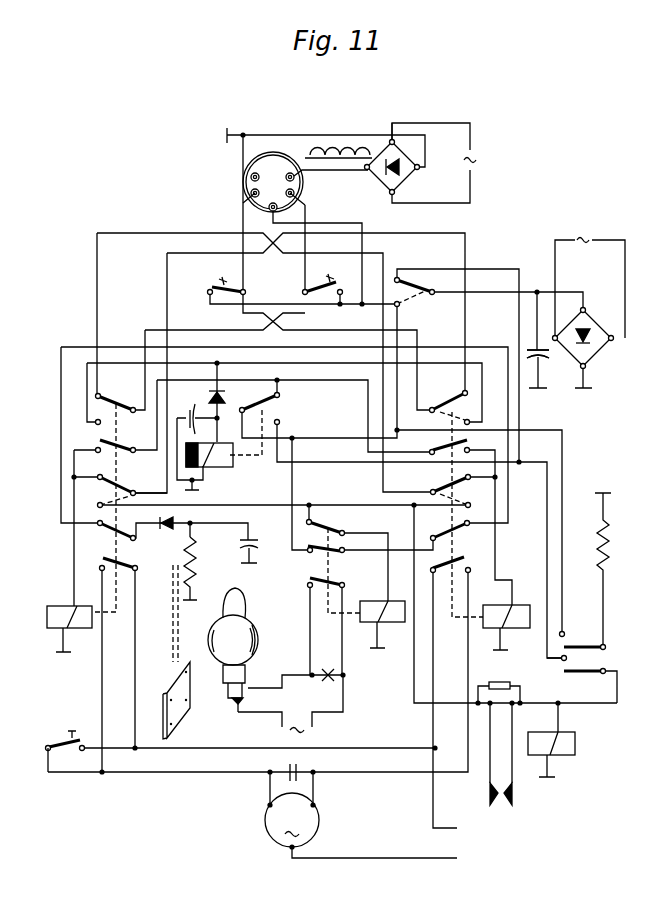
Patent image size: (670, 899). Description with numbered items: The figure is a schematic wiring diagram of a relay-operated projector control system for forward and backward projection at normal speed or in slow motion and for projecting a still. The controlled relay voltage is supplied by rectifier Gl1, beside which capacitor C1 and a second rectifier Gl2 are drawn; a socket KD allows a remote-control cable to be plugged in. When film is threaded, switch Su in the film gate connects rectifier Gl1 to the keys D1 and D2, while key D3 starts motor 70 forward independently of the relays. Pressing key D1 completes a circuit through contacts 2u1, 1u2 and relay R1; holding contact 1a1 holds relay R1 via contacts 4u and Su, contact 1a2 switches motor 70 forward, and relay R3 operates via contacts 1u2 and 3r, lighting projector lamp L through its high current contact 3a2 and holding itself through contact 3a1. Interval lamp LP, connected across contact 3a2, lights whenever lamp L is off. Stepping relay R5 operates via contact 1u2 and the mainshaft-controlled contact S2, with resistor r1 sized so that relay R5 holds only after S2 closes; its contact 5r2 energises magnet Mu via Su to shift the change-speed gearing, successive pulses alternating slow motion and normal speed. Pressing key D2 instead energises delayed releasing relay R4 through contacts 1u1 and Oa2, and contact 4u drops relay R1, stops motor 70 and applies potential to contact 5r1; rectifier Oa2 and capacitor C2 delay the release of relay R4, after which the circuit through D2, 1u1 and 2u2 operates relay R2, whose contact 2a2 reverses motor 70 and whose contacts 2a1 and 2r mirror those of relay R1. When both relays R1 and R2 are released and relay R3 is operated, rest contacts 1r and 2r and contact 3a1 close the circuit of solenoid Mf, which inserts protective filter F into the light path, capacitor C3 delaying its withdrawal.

The motor 70 is at (272, 838).
The socket KD is at (305, 182).
The rectifier Gl2 is at (366, 167).
The rectifier Gl1 is at (587, 346).
The capacitor C1 is at (542, 362).
The key D1 is at (221, 280).
The key D2 is at (330, 279).
The key D3 is at (61, 748).
The switch Su is at (415, 299).
The change-over contact of relay R1 1u1 is at (116, 404).
The holding contact of relay R1 1a1 is at (119, 440).
The change-over contact of relay R1 1u2 is at (122, 488).
The rest contact of relay R1 1r is at (117, 527).
The working contact of relay R1 1a2 is at (121, 558).
The relay R1 is at (69, 629).
The rectifier Oa2 is at (192, 453).
The capacitor C2 is at (181, 416).
The delayed releasing relay R4 is at (209, 455).
The change-over contact of relay R4 4u is at (269, 409).
The solenoid Mf is at (199, 568).
The capacitor C3 is at (257, 551).
The change-over contact of relay R2 2u1 is at (450, 405).
The working contact of relay R2 2a1 is at (445, 444).
The change-over contact of relay R2 2u2 is at (444, 490).
The rest contact of relay R2 2r is at (448, 529).
The working contact of relay R2 2a2 is at (458, 558).
The relay R2 is at (506, 627).
The rest contact of relay R3 3r is at (326, 523).
The working contact of relay R3 3a1 is at (326, 558).
The working contact of relay R3 3a2 is at (326, 590).
The relay R3 is at (382, 624).
The projector lamp L is at (233, 650).
The protective filter F is at (169, 700).
The interval lamp LP is at (327, 683).
The magnet Mu is at (588, 570).
The rest contact of relay R5 5r2 is at (583, 639).
The rest contact of relay R5 5r1 is at (584, 675).
The resistor r1 is at (499, 678).
The stepping relay R5 is at (551, 754).
The contact S2 is at (499, 764).